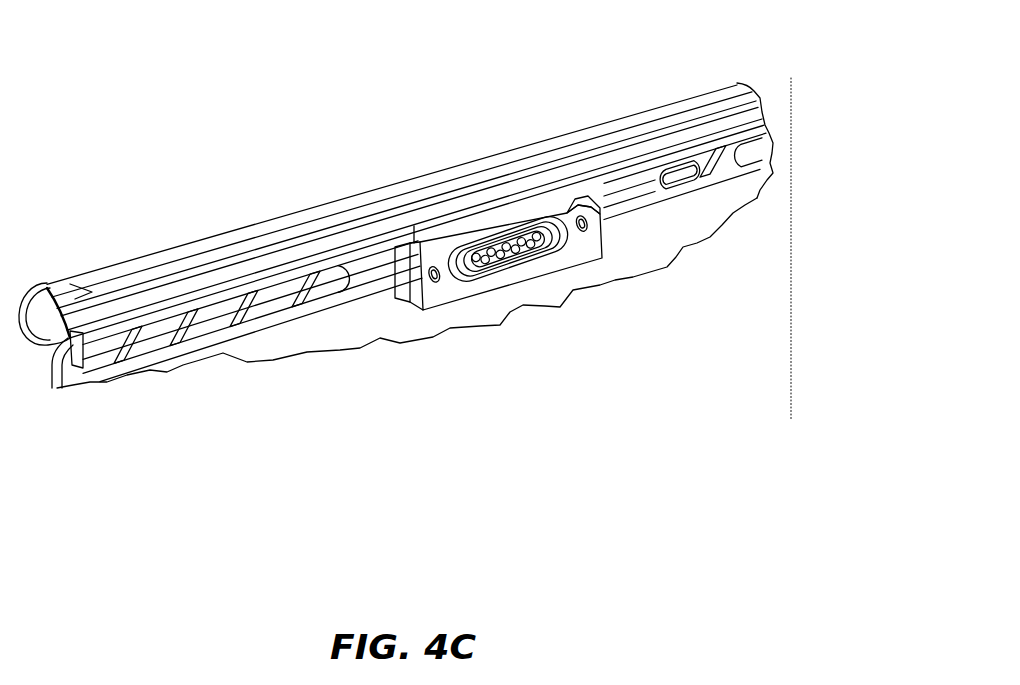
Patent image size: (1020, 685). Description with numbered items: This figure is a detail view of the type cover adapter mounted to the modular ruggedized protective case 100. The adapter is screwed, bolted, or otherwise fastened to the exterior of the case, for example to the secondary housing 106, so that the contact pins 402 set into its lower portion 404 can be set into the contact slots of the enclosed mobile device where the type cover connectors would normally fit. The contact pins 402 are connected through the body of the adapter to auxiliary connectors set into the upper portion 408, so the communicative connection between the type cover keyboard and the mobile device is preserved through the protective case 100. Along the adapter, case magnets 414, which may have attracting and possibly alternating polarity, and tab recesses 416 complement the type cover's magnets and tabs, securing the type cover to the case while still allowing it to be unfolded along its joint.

The modular ruggedized protective case 100 is at (80, 89).
The secondary housing 106 is at (58, 372).
The contact pins 402 is at (506, 244).
The lower portion 404 is at (440, 292).
The upper portion 408 is at (415, 242).
The case magnets 414 is at (770, 172).
The tab recesses 416 is at (340, 268).